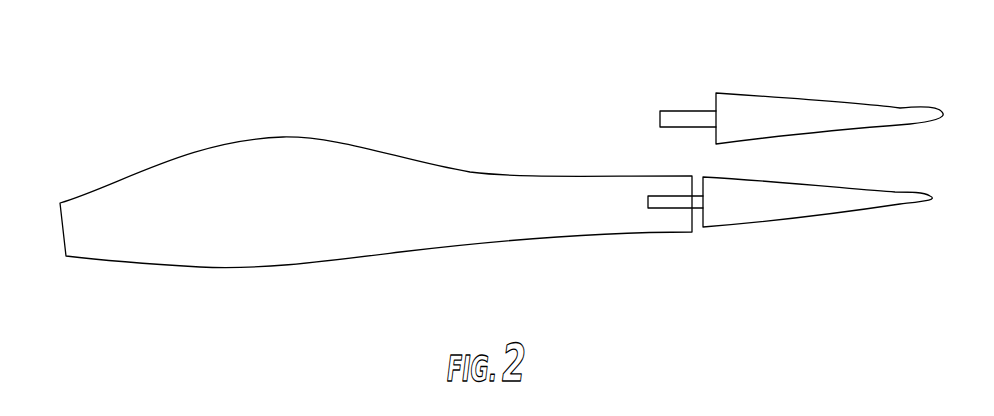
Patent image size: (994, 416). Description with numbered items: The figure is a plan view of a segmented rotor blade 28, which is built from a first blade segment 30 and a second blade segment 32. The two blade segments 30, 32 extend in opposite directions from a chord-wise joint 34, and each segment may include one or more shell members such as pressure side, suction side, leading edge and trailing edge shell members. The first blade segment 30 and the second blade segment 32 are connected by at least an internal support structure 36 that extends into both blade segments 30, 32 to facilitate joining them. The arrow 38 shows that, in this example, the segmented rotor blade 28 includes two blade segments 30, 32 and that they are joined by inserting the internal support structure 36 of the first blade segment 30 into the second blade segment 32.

The rotor blade 28 is at (97, 89).
The first blade segment 30 is at (796, 106).
The second blade segment 32 is at (162, 255).
The chord-wise joint 34 is at (697, 225).
The internal support structure 36 is at (680, 114).
The arrow 38 is at (828, 139).